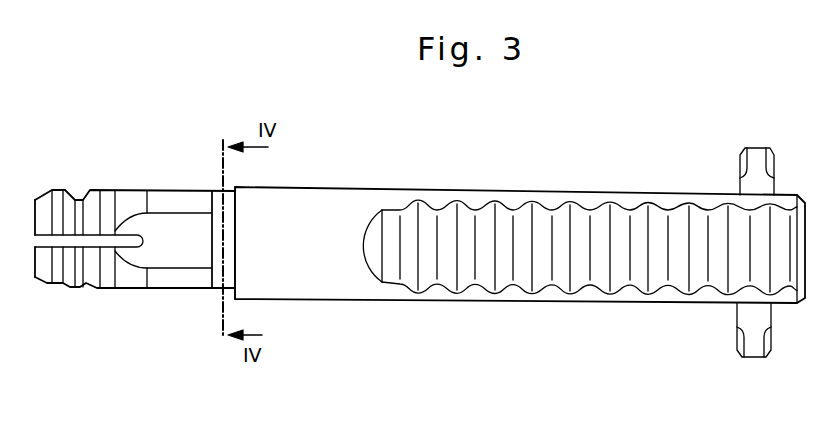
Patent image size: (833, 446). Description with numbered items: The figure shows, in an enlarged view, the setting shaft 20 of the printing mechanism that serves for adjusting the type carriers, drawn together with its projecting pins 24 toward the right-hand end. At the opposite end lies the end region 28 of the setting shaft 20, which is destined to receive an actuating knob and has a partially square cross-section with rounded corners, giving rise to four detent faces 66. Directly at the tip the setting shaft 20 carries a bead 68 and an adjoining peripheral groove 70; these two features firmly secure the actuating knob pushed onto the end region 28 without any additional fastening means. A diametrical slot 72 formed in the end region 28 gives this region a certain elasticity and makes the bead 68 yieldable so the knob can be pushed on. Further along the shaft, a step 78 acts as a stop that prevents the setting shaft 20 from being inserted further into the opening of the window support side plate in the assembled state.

The setting shaft 20 is at (398, 192).
The pins 24 is at (757, 153).
The end region 28 is at (153, 219).
The detent faces 66 is at (177, 190).
The bead 68 is at (55, 281).
The peripheral groove 70 is at (81, 275).
The diametrical slot 72 is at (38, 242).
The step 78 is at (228, 298).